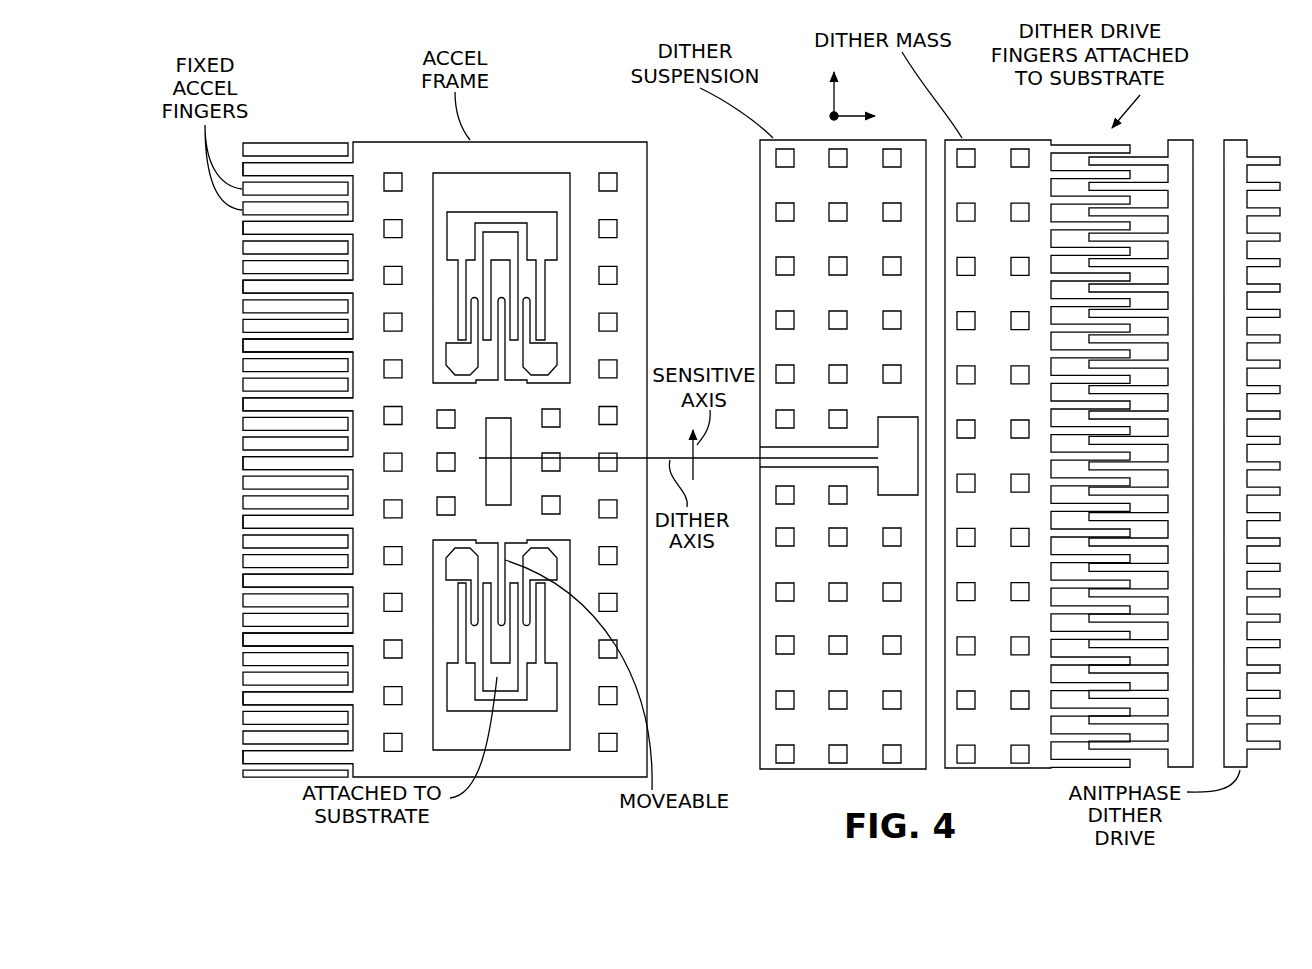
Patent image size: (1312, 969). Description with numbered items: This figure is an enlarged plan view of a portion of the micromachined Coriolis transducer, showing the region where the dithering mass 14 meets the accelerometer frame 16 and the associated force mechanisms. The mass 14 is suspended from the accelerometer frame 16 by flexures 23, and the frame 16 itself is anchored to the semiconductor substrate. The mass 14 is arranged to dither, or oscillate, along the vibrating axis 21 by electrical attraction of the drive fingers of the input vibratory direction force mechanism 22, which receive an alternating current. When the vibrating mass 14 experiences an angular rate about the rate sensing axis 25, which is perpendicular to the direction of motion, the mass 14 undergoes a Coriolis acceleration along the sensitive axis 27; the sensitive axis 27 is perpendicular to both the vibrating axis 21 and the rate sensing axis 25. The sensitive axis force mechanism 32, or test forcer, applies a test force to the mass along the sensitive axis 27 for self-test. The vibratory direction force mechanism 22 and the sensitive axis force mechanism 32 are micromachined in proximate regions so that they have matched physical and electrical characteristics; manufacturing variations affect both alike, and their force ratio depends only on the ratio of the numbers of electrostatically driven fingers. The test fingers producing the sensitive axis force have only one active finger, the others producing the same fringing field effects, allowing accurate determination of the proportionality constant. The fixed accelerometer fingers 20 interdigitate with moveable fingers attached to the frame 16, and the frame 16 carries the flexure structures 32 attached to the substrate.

The mass 14 is at (990, 138).
The accelerometer frame 16 is at (600, 150).
The moveable accelerometer fingers 20 is at (259, 785).
The vibrating axis 21 is at (857, 118).
The input vibratory direction force mechanism 22 is at (1185, 138).
The flexures 23 is at (312, 137).
The rate sensing axis 25 is at (830, 115).
The sensitive axis 27 is at (834, 88).
The sensitive axis force mechanism 32 is at (519, 184).